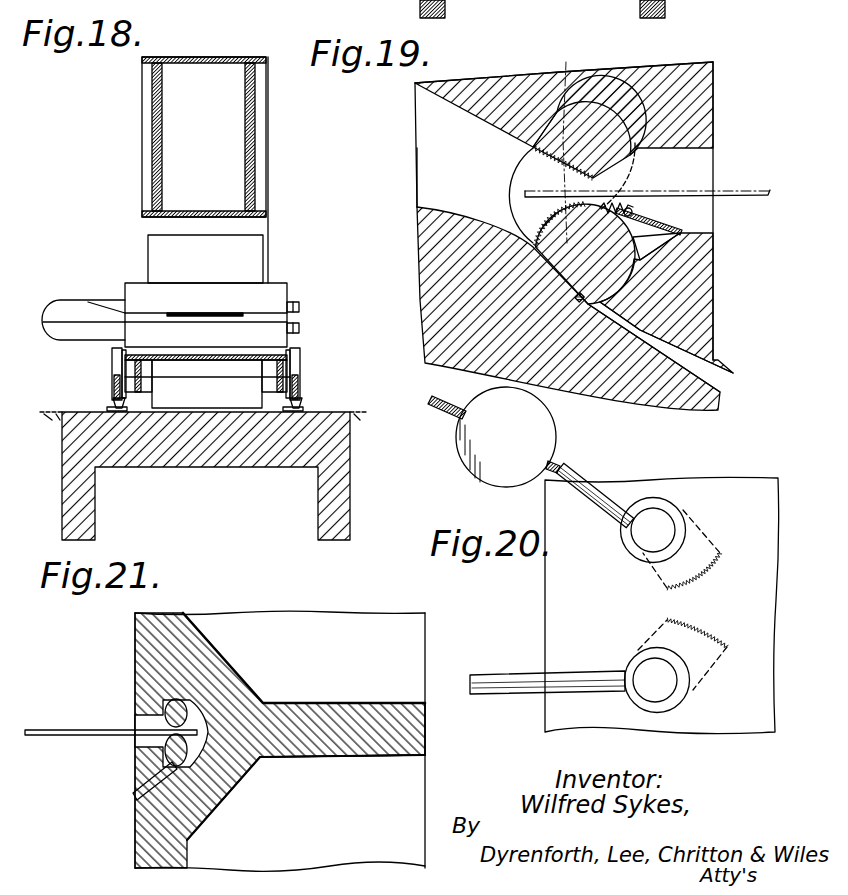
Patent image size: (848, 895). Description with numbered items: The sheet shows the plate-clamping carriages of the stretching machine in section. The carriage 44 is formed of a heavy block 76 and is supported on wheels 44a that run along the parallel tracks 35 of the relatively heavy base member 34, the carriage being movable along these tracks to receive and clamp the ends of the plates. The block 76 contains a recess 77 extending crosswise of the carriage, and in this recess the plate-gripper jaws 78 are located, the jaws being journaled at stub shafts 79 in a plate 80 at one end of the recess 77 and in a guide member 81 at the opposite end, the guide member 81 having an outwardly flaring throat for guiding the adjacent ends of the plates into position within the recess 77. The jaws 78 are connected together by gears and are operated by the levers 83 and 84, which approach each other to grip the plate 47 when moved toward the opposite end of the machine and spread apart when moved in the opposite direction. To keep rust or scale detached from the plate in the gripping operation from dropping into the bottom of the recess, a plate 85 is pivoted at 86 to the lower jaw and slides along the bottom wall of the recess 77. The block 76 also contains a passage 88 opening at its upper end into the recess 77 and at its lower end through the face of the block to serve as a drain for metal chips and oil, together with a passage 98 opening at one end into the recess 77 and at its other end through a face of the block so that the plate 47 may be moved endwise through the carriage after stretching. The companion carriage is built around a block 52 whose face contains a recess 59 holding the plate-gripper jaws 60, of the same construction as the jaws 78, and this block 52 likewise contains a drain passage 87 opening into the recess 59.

In FIG. 18, the heavy block 76 is at (252, 148).
In FIG. 19, the heavy block 76 is at (702, 290).
In FIG. 18, the carriage 44 is at (274, 201).
In FIG. 18, the passage 98 is at (237, 298).
In FIG. 19, the passage 98 is at (433, 175).
In FIG. 18, the recess 77 is at (288, 298).
In FIG. 19, the recess 77 is at (530, 177).
In FIG. 18, the guide member 81 is at (108, 285).
In FIG. 18, the wheels 44a is at (320, 372).
In FIG. 18, the parallel tracks 35 is at (117, 407).
In FIG. 18, the base member 34 is at (340, 478).
In FIG. 19, the plate-gripper jaws 78 is at (562, 135).
In FIG. 20, the plate-gripper jaws 78 is at (713, 548).
In FIG. 19, the stub shafts 79 is at (647, 70).
In FIG. 20, the stub shafts 79 is at (655, 517).
In FIG. 19, the plate 47 is at (743, 192).
In FIG. 21, the plate 47 is at (72, 731).
In FIG. 19, the pivot 86 is at (635, 207).
In FIG. 19, the plate 85 is at (663, 231).
In FIG. 19, the passage 88 is at (682, 362).
In FIG. 20, the lever 84 is at (574, 473).
In FIG. 20, the plate 80 is at (728, 493).
In FIG. 20, the lever 83 is at (572, 678).
In FIG. 21, the plate-gripper jaws 60 is at (183, 700).
In FIG. 21, the block 52 is at (347, 717).
In FIG. 21, the recess 59 is at (193, 723).
In FIG. 21, the passage 87 is at (150, 780).